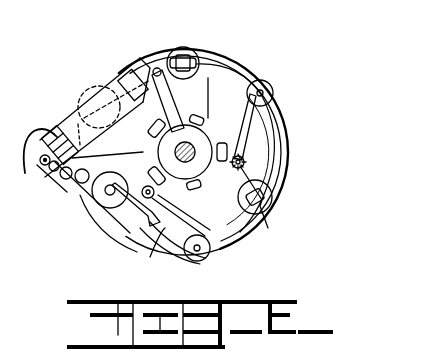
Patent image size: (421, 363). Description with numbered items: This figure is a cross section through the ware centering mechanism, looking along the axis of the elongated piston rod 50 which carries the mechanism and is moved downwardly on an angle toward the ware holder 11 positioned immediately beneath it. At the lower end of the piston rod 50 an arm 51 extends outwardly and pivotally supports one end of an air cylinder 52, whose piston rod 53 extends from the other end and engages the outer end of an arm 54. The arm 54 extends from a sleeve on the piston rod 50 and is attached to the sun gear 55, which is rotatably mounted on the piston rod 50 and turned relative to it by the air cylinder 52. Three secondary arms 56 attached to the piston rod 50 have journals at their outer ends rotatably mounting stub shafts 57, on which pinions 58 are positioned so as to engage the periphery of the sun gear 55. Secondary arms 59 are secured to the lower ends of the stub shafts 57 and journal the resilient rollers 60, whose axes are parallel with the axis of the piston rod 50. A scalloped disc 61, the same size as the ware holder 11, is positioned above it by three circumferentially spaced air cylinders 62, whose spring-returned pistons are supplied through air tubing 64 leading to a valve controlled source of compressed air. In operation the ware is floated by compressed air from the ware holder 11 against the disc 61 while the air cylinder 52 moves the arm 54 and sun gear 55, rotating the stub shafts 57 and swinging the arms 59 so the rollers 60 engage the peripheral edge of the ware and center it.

The ware holder 11 is at (136, 250).
The piston rod 50 is at (182, 160).
The arm 51 is at (70, 192).
The air cylinder 52 is at (70, 115).
The piston rod 53 is at (148, 64).
The arm 54 is at (157, 67).
The sun gear 55 is at (222, 112).
The secondary arms 56 is at (176, 197).
The stub shafts 57 is at (252, 165).
The pinions 58 is at (246, 162).
The secondary arms 59 is at (262, 140).
The resilient rollers 60 is at (269, 87).
The scalloped disc 61 is at (222, 70).
The air cylinders 62 is at (190, 58).
The air tubing 64 is at (258, 236).